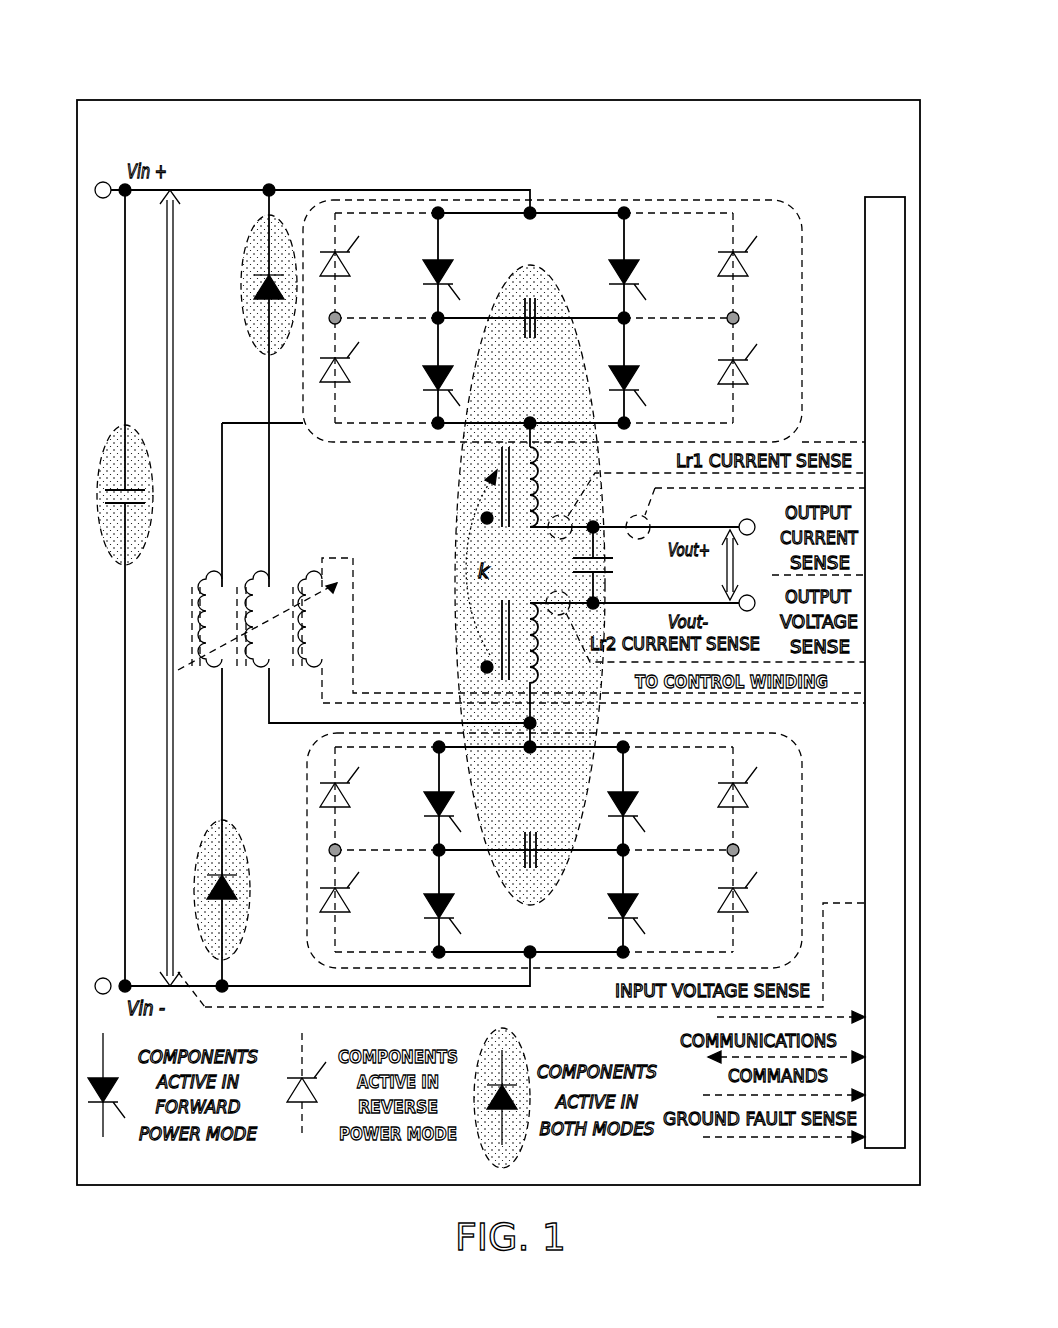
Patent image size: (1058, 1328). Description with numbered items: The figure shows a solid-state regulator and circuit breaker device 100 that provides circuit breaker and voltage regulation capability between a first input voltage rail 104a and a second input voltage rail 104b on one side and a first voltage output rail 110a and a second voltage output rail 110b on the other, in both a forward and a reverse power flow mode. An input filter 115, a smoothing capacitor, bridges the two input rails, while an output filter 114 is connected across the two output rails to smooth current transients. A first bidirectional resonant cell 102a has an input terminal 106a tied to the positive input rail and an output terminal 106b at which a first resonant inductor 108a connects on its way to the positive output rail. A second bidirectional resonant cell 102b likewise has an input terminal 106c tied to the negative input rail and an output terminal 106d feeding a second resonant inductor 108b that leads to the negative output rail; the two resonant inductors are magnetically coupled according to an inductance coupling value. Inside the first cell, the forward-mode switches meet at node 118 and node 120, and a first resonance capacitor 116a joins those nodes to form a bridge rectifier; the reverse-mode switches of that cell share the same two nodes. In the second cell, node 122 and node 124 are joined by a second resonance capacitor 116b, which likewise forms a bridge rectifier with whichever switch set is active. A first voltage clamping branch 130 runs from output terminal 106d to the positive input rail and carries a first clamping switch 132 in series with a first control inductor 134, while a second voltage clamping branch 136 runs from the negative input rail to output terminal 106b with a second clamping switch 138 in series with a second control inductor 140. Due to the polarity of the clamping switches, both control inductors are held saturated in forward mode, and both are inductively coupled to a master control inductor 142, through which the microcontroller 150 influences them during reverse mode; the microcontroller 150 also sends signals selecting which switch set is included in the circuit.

The solid-state regulator and circuit breaker device 100 is at (797, 80).
The first bidirectional resonant cell 102a is at (552, 292).
The second bidirectional resonant cell 102b is at (554, 889).
The first input voltage rail 104a is at (173, 190).
The second input voltage rail 104b is at (162, 978).
The input terminal 106a is at (531, 210).
The output terminal 106b is at (531, 420).
The input terminal 106c is at (531, 960).
The output terminal 106d is at (531, 752).
The first resonant inductor 108a is at (500, 510).
The second resonant inductor 108b is at (500, 640).
The first voltage output rail 110a is at (748, 519).
The second voltage output rail 110b is at (760, 573).
The output filter 114 is at (598, 566).
The input filter 115 is at (110, 495).
The first resonance capacitor 116a is at (524, 300).
The second resonance capacitor 116b is at (524, 835).
The node 118 is at (436, 318).
The node 120 is at (628, 320).
The node 122 is at (437, 850).
The node 124 is at (627, 851).
The first voltage clamping branch 130 is at (268, 388).
The first clamping switch 132 is at (258, 278).
The first control inductor 134 is at (236, 580).
The second voltage clamping branch 136 is at (223, 775).
The second clamping switch 138 is at (235, 895).
The second control inductor 140 is at (192, 580).
The master control inductor 142 is at (300, 580).
The microcontroller 150 is at (906, 490).